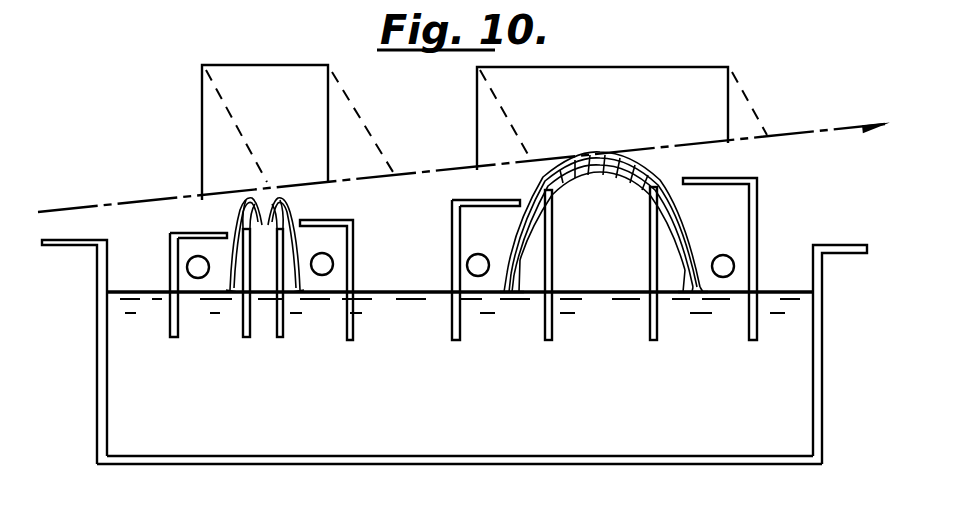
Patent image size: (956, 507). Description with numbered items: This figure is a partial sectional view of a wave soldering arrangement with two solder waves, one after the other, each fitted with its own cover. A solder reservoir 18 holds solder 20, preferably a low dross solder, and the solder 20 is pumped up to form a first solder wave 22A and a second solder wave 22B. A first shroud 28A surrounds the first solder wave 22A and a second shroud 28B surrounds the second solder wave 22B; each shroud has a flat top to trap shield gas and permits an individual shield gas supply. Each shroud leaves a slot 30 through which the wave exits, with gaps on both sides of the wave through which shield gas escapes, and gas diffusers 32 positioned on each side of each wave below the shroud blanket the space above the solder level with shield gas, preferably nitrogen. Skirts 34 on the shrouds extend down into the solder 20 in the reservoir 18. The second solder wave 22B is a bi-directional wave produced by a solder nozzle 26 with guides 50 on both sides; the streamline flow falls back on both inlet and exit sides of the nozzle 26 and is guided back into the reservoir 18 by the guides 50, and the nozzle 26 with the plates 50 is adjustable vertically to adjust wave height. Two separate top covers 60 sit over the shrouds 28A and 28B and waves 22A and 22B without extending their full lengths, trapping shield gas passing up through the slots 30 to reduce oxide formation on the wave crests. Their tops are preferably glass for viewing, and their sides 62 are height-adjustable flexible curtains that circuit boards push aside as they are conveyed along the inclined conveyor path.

The solder reservoir 18 is at (96, 355).
The solder 20 is at (400, 443).
The first solder wave 22A is at (297, 200).
The second solder wave 22B is at (655, 160).
The solder nozzle 26 is at (243, 322).
The first shroud 28A is at (348, 219).
The second shroud 28B is at (750, 176).
The slot 30 is at (228, 224).
The gas diffuser 32 is at (188, 267).
The skirt 34 is at (170, 325).
The guide 50 is at (516, 262).
The top cover 60 is at (296, 65).
The side 62 is at (224, 100).